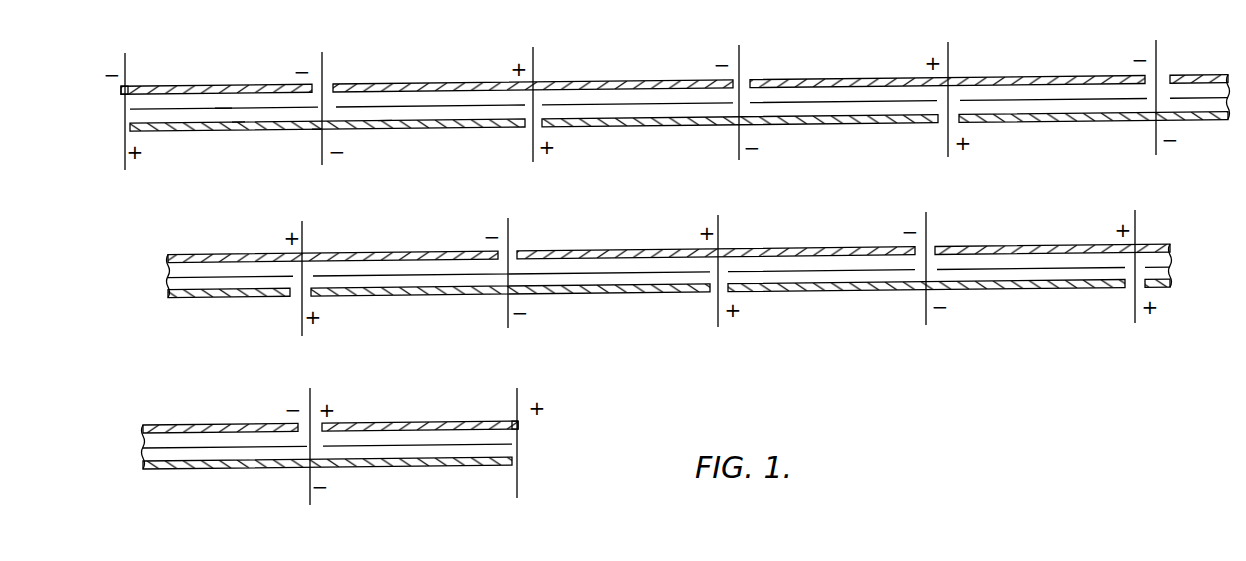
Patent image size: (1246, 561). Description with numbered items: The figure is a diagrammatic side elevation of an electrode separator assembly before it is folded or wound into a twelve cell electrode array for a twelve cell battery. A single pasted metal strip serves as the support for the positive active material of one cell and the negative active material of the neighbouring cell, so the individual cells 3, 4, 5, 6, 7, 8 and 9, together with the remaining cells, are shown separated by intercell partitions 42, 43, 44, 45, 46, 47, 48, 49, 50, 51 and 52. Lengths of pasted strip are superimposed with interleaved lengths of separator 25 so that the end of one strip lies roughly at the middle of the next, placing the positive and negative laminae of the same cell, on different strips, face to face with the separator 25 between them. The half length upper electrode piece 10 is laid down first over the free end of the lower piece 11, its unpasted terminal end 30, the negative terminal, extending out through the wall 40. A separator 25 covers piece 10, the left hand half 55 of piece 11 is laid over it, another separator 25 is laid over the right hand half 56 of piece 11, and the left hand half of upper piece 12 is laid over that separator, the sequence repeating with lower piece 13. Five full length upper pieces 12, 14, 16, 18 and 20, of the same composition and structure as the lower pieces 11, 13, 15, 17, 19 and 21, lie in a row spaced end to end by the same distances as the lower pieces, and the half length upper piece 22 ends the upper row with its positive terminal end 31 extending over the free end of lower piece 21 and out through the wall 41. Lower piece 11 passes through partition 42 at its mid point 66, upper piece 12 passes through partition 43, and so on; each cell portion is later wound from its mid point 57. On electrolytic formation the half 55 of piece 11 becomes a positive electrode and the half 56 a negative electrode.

The cell 3 is at (642, 35).
The cell 4 is at (845, 33).
The cell 5 is at (1070, 29).
The cell 6 is at (235, 209).
The cell 7 is at (400, 207).
The cell 8 is at (623, 204).
The cell 9 is at (827, 203).
The half length upper electrode piece 10 is at (265, 86).
The lower electrode piece 11 is at (271, 127).
The upper electrode piece 12 is at (476, 86).
The lower electrode piece 13 is at (589, 126).
The upper electrode piece 14 is at (885, 81).
The lower electrode piece 15 is at (1002, 122).
The upper electrode piece 16 is at (1183, 76).
The lower electrode piece 17 is at (400, 297).
The upper electrode piece 18 is at (666, 250).
The lower electrode piece 19 is at (778, 292).
The upper electrode piece 20 is at (983, 246).
The lower electrode piece 21 is at (1158, 287).
The half length upper electrode piece 22 is at (482, 422).
The separator 25 is at (166, 109).
The terminal end 30 is at (121, 92).
The terminal end 31 is at (518, 430).
The wall 40 is at (125, 163).
The wall 41 is at (517, 473).
The intercell partition 42 is at (322, 163).
The intercell partition 43 is at (533, 160).
The intercell partition 44 is at (739, 157).
The intercell partition 45 is at (948, 155).
The intercell partition 46 is at (1156, 150).
The intercell partition 47 is at (302, 325).
The intercell partition 48 is at (508, 321).
The intercell partition 49 is at (718, 318).
The intercell partition 50 is at (926, 315).
The intercell partition 51 is at (1135, 318).
The intercell partition 52 is at (310, 497).
The left hand half of piece 11 55 is at (236, 124).
The right hand half of piece 11 56 is at (383, 128).
The mid point 57 is at (223, 108).
The mid point 66 is at (321, 130).